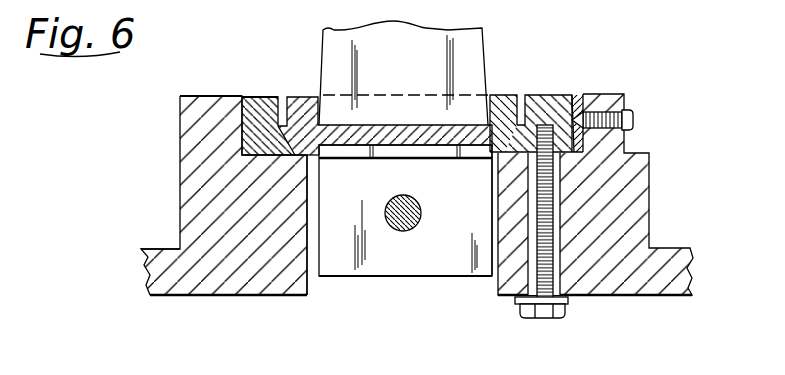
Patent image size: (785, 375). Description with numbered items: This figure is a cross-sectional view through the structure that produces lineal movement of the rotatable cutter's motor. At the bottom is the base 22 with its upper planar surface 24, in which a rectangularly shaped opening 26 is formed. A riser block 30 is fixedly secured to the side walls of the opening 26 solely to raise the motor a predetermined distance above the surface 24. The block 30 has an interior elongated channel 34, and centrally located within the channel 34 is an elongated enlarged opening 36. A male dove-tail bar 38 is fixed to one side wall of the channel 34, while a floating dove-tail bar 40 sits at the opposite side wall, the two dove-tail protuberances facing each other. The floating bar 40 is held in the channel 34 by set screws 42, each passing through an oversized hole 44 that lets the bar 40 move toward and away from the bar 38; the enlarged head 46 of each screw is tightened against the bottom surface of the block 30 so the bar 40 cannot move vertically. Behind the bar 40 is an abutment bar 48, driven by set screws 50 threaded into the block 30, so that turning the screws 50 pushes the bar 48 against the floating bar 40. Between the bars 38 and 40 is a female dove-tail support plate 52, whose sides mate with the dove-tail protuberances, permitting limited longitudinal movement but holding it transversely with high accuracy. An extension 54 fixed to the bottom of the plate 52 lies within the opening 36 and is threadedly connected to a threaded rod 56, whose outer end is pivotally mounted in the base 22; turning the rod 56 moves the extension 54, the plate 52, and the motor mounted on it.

The base 22 is at (688, 265).
The upper planar surface 24 is at (155, 249).
The rectangularly shaped opening 26 is at (308, 283).
The riser block 30 is at (194, 168).
The interior elongated channel 34 is at (243, 97).
The elongated enlarged opening 36 is at (410, 282).
The male dove-tail bar 38 is at (290, 97).
The floating dove-tail bar 40 is at (537, 95).
The set screw 42 is at (545, 227).
The oversized hole 44 is at (540, 205).
The enlarged head 46 is at (555, 315).
The abutment bar 48 is at (573, 95).
The set screw 50 is at (632, 108).
The female dove-tail support plate 52 is at (420, 145).
The extension 54 is at (463, 268).
The threaded rod 56 is at (394, 228).